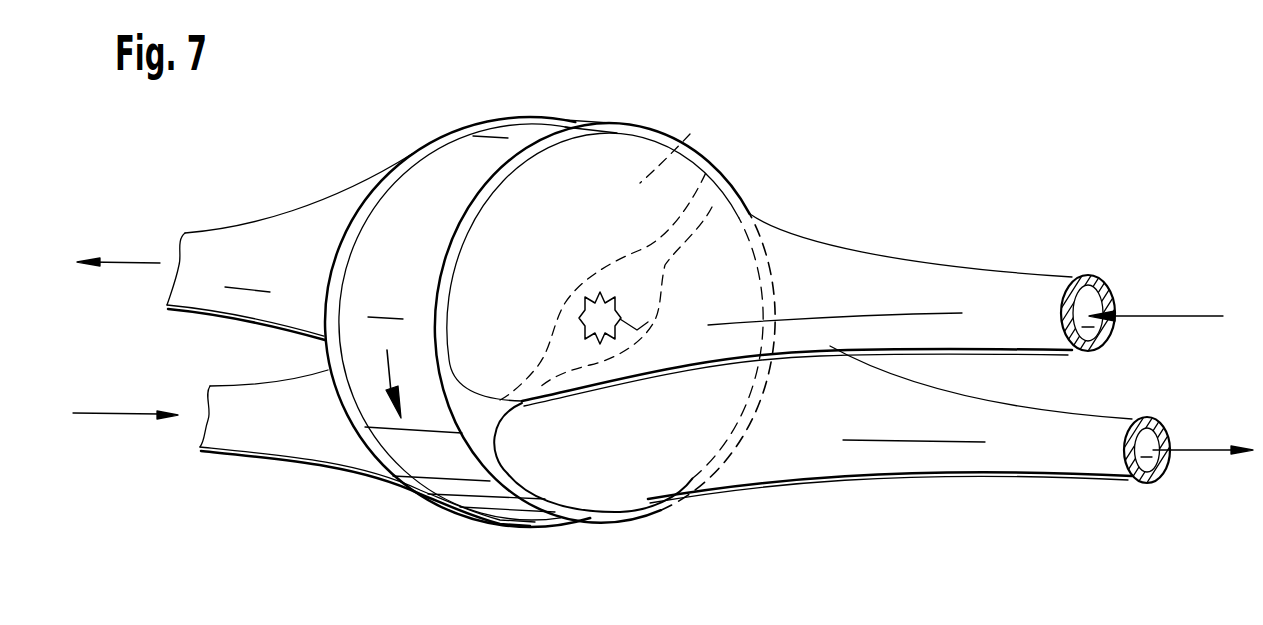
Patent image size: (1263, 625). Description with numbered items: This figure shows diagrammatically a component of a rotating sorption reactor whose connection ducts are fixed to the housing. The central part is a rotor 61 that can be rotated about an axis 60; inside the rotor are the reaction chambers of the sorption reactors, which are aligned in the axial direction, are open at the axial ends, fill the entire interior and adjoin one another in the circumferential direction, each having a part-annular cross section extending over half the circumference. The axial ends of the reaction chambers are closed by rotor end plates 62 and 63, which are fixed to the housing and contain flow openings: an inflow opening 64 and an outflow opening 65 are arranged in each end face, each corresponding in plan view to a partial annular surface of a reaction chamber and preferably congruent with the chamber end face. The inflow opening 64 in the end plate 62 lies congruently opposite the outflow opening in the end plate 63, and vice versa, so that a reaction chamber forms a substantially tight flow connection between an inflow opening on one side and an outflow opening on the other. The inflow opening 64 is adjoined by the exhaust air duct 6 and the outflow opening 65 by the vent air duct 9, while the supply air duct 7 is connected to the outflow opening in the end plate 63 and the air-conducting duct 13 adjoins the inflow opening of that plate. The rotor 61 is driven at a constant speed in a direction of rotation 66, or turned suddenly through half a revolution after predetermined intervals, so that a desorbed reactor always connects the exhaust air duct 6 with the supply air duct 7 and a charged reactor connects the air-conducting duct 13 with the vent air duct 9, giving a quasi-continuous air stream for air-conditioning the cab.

The exhaust air duct 6 is at (900, 272).
The supply air duct 7 is at (273, 243).
The vent air duct 9 is at (938, 453).
The air-conducting duct 13 is at (278, 436).
The axis 60 is at (666, 312).
The rotor 61 is at (535, 133).
The rotor end plate 62 is at (480, 428).
The rotor end plate 63 is at (325, 348).
The inflow opening 64 is at (676, 160).
The outflow opening 65 is at (621, 477).
The direction of rotation 66 is at (392, 373).